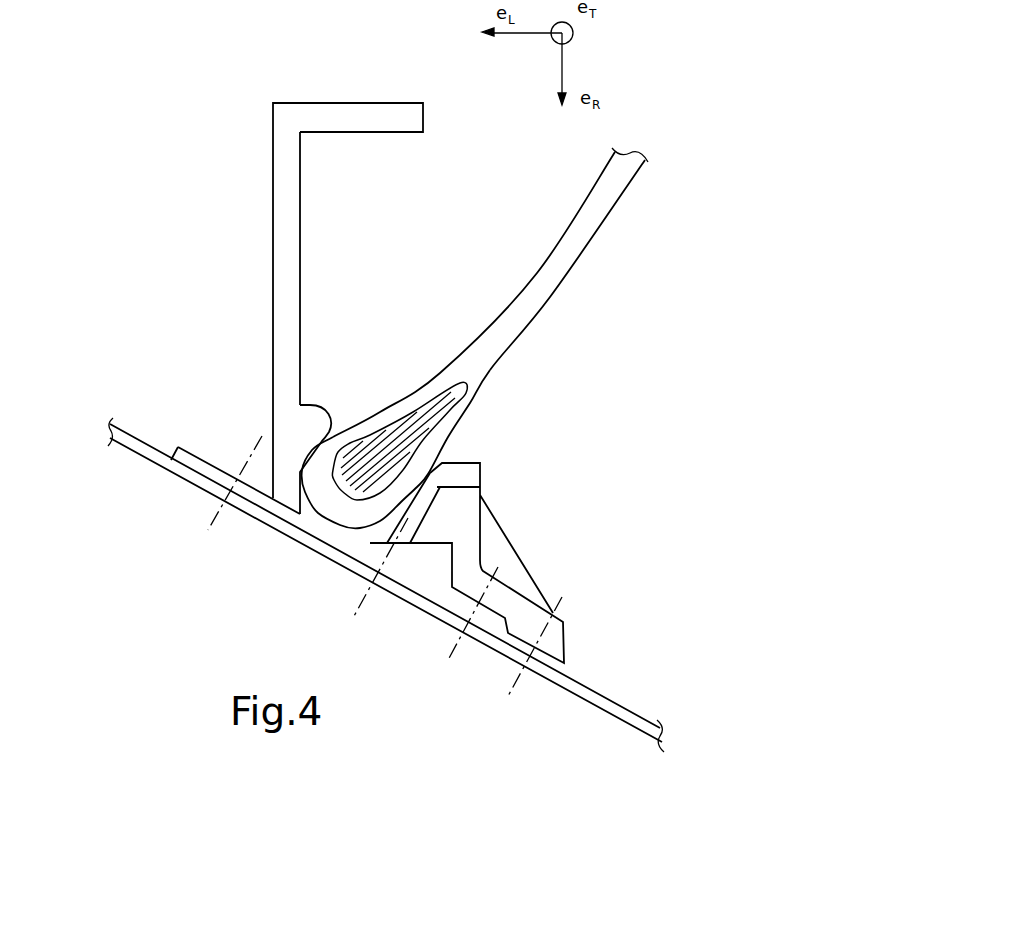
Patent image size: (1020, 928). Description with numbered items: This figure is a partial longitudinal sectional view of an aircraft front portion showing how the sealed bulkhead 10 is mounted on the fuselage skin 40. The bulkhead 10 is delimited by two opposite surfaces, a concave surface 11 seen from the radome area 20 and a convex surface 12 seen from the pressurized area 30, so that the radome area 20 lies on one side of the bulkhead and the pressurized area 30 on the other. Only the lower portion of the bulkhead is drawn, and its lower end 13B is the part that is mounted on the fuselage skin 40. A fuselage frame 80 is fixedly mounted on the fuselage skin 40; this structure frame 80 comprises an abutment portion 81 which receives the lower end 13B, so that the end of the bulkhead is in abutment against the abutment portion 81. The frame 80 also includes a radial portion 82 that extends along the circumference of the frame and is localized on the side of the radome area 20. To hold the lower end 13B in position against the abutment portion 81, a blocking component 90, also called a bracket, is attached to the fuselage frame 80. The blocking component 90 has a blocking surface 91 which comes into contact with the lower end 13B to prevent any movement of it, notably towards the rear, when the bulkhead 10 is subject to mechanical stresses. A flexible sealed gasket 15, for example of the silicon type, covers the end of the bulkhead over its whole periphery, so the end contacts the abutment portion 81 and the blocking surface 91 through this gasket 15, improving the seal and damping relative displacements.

The sealed bulkhead 10 is at (526, 385).
The concave surface 11 is at (537, 275).
The convex surface 12 is at (550, 297).
The lower end 13B is at (386, 429).
The sealed gasket 15 is at (338, 507).
The radome area 20 is at (241, 324).
The pressurized area 30 is at (588, 546).
The fuselage skin 40 is at (578, 694).
The fuselage frame 80 is at (264, 324).
The abutment portion 81 is at (300, 482).
The radial portion 82 is at (272, 134).
The blocking component 90 is at (540, 521).
The blocking surface 91 is at (415, 494).